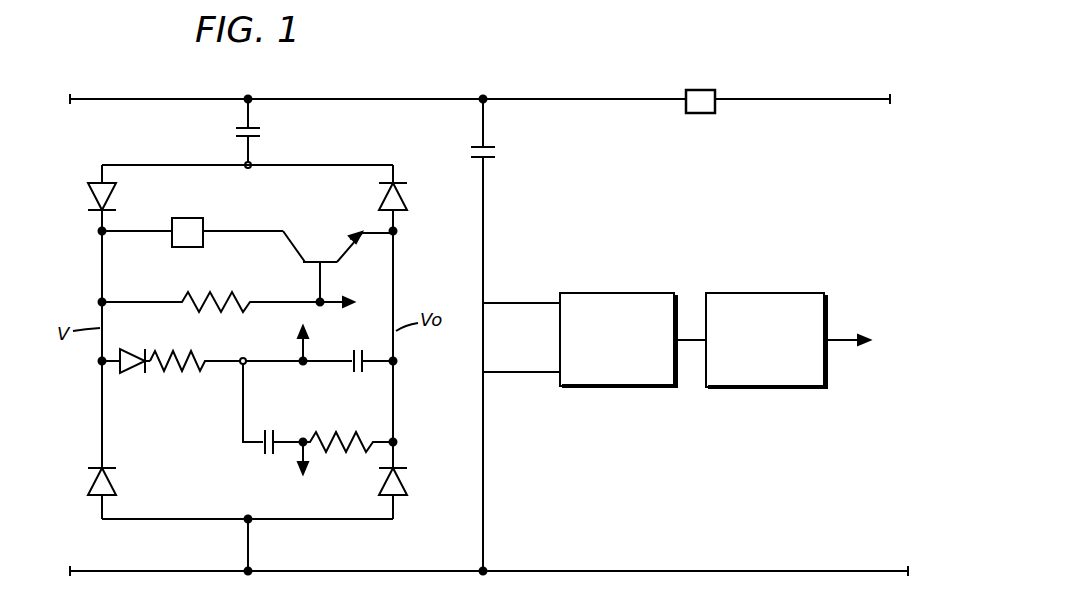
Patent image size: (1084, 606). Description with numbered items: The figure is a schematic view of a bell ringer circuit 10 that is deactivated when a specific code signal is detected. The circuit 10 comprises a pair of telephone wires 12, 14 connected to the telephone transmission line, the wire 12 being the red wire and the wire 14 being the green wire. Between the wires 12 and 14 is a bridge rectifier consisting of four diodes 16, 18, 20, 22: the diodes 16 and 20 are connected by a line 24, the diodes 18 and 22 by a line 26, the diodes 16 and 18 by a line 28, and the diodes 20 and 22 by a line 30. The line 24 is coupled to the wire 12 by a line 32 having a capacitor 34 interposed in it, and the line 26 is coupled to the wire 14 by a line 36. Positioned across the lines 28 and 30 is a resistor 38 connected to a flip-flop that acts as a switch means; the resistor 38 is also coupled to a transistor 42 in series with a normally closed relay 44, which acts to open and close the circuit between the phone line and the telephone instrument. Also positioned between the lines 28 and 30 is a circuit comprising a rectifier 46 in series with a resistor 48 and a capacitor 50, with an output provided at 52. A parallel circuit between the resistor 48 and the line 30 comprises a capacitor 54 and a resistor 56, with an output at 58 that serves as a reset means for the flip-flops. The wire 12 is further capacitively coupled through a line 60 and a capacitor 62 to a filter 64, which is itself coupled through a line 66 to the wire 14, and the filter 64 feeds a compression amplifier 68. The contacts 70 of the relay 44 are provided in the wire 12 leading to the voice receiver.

The circuit 10 is at (447, 96).
The telephone wire 12 is at (104, 99).
The telephone wire 14 is at (383, 572).
The diode 16 is at (88, 194).
The diode 18 is at (116, 487).
The diode 20 is at (407, 206).
The diode 22 is at (407, 488).
The line 24 is at (306, 165).
The line 26 is at (170, 519).
The line 28 is at (101, 421).
The line 30 is at (394, 292).
The line 32 is at (240, 116).
The capacitor 34 is at (262, 133).
The line 36 is at (248, 558).
The resistor 38 is at (250, 286).
The transistor 42 is at (338, 262).
The relay 44 is at (216, 205).
The rectifier 46 is at (142, 340).
The resistor 48 is at (170, 360).
The capacitor 50 is at (344, 320).
The output 52 is at (316, 340).
The capacitor 54 is at (297, 412).
The resistor 56 is at (353, 422).
The output 58 is at (283, 456).
The line 60 is at (480, 126).
The capacitor 62 is at (492, 151).
The filter 64 is at (622, 293).
The line 66 is at (486, 468).
The compression amplifier 68 is at (781, 293).
The contacts 70 is at (686, 90).